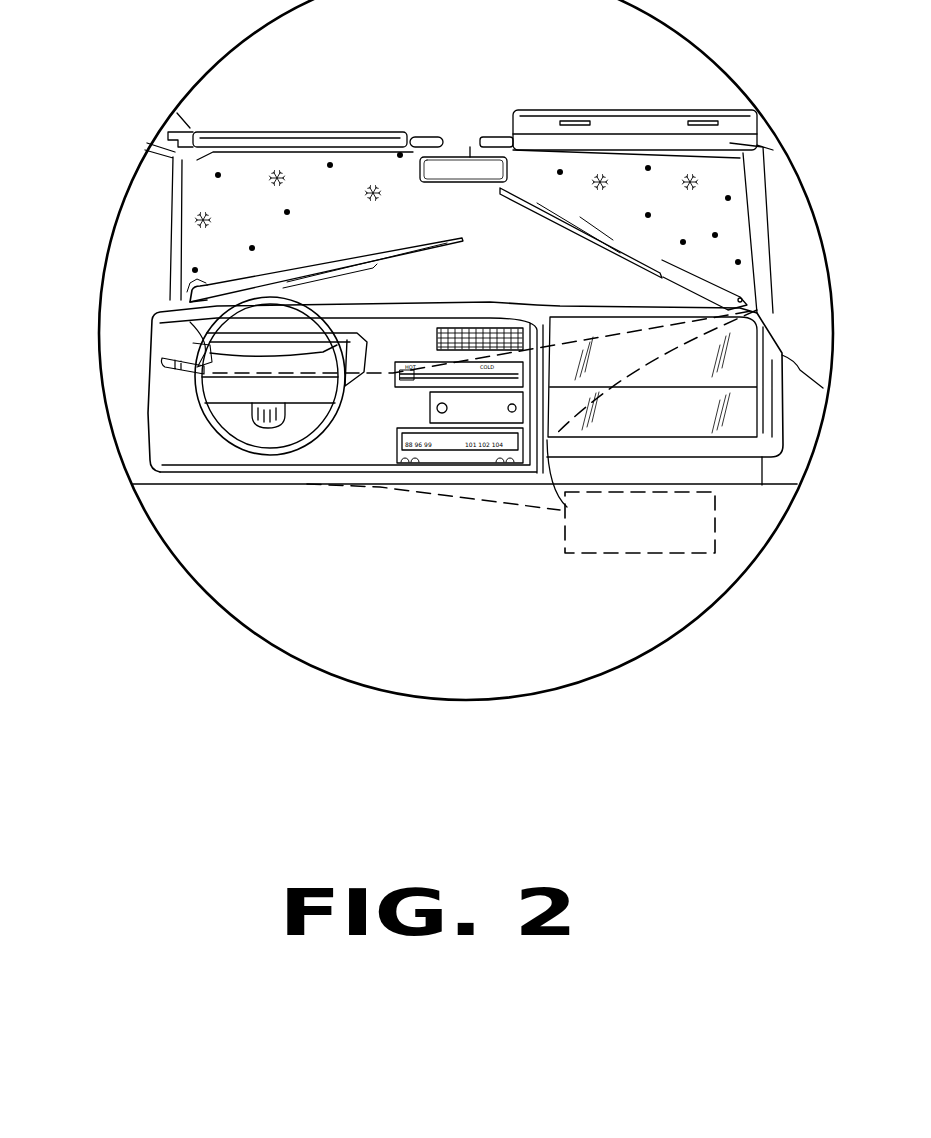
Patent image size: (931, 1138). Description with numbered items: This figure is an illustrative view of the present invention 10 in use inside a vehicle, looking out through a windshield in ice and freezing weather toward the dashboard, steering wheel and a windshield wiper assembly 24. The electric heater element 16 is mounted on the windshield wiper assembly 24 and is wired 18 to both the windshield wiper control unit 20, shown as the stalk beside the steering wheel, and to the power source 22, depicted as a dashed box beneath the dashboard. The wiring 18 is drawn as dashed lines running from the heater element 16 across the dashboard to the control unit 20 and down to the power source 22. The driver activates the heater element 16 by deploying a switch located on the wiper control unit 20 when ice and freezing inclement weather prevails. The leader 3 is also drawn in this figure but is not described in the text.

The present invention 10 is at (170, 283).
The sensor 3 is at (233, 268).
The electric heater element 16 is at (237, 277).
The windshield wiper assembly 24 is at (385, 245).
The wiring 18 is at (213, 373).
The windshield wiper control unit 20 is at (178, 372).
The power source 22 is at (628, 555).